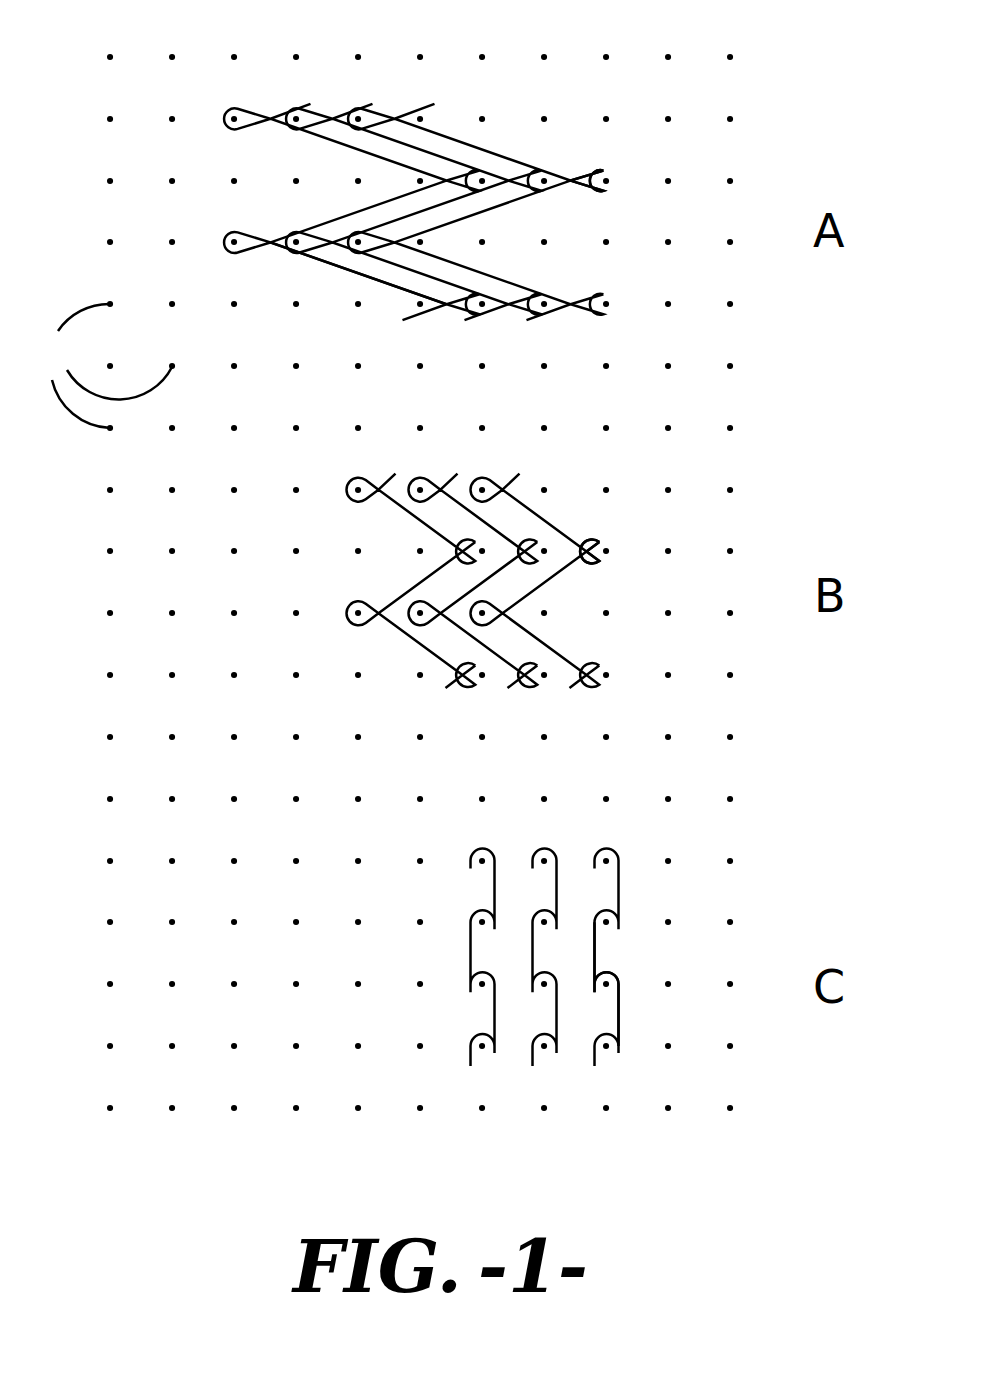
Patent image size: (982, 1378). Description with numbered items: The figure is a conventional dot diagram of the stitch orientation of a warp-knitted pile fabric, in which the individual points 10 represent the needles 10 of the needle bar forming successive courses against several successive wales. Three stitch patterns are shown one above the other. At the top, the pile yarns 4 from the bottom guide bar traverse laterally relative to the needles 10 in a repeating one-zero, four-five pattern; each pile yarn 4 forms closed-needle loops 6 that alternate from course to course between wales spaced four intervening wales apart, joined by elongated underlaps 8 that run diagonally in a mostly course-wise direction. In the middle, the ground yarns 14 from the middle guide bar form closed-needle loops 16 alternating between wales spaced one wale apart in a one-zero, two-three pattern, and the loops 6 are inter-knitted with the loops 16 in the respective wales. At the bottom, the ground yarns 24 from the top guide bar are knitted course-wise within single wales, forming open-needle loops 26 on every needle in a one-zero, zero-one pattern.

The pile yarns 4 is at (437, 160).
The closed-needle loops 6 is at (609, 195).
The elongated underlaps 8 is at (366, 285).
The needles 10 is at (382, 582).
The ground yarns 14 is at (584, 542).
The closed-needle loops 16 is at (609, 565).
The ground yarns 24 is at (648, 912).
The open-needle loops 26 is at (605, 975).